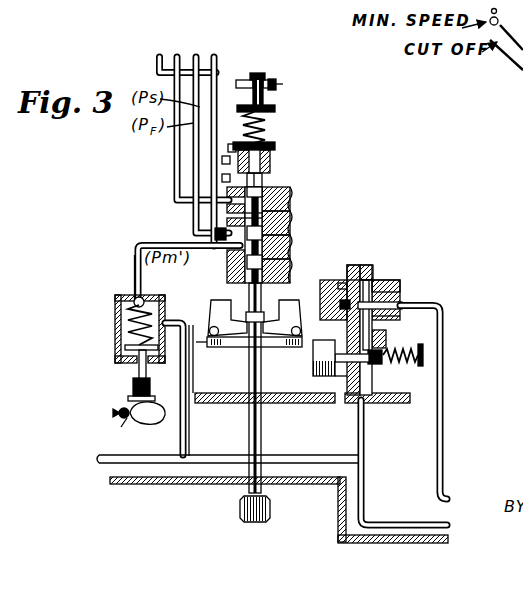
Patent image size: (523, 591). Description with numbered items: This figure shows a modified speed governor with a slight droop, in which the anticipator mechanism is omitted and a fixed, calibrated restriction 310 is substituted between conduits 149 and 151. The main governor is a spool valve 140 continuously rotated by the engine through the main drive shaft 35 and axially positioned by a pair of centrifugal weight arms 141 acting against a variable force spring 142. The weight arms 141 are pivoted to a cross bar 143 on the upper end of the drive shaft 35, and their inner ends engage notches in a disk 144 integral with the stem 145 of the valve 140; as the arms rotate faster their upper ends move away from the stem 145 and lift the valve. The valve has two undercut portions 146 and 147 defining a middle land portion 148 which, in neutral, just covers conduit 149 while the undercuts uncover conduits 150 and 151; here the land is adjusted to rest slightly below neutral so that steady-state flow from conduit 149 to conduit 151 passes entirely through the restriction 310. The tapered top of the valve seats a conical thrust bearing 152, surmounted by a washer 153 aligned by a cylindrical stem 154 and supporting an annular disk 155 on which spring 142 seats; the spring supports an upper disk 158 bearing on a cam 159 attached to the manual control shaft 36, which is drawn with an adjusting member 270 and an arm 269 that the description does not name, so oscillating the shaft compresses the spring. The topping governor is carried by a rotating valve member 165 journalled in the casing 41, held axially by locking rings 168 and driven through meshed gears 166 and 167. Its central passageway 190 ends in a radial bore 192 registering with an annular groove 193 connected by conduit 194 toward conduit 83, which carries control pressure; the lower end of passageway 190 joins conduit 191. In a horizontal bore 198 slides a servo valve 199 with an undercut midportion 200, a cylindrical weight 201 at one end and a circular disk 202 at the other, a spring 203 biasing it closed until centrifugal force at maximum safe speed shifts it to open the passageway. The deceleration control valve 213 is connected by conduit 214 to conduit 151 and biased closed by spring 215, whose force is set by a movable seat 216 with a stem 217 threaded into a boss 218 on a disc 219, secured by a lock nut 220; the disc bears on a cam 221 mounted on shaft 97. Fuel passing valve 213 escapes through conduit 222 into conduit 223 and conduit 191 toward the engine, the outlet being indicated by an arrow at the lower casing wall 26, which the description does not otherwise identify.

The conduit 83 is at (159, 56).
The conduit 150 is at (177, 56).
The conduit 151 is at (196, 56).
The conduit 149 is at (214, 56).
The fixed calibrated restriction 310 is at (200, 241).
The conical thrust bearing 152 is at (226, 178).
The washer 153 is at (226, 160).
The cylindrical stem 154 is at (232, 148).
The adjusting screw 270 is at (261, 74).
The lever arm 269 is at (239, 82).
The manual control shaft 36 is at (283, 84).
The cam 159 is at (276, 107).
The upper disk 158 is at (266, 124).
The variable force spring 142 is at (276, 141).
The annular disk 155 is at (271, 155).
The casing 41 is at (264, 189).
The undercut portion 146 is at (291, 196).
The middle land portion 148 is at (291, 217).
The undercut portion 147 is at (291, 237).
The spool valve 140 is at (291, 257).
The stem 145 is at (249, 298).
The centrifugal weight arms 141 is at (209, 312).
The cross bar 143 is at (232, 347).
The disk 144 is at (204, 344).
The gear 166 is at (195, 392).
The gear 167 is at (327, 404).
The locking rings 168 is at (342, 267).
The rotating valve member 165 is at (362, 265).
The radial bore 192 is at (378, 281).
The annular groove 193 is at (392, 301).
The conduit 194 is at (444, 305).
The central passageway 190 is at (402, 317).
The horizontal bore 198 is at (378, 350).
The circular disk 202 is at (420, 352).
The spring 203 is at (424, 360).
The undercut midportion 200 is at (376, 366).
The cylindrical weight 201 is at (312, 359).
The servo valve 199 is at (338, 377).
The valve 213 is at (126, 300).
The conduit 214 is at (134, 263).
The spring 215 is at (118, 321).
The movable seat 216 is at (120, 351).
The stem 217 is at (146, 371).
The boss 218 is at (132, 387).
The lock nut 220 is at (128, 391).
The shaft 97 is at (124, 409).
The cam 221 is at (125, 419).
The disc 219 is at (178, 414).
The conduit 222 is at (191, 429).
The conduit 223 is at (294, 460).
The conduit 191 is at (366, 467).
The casing 26 is at (336, 544).
The main drive shaft 35 is at (240, 511).